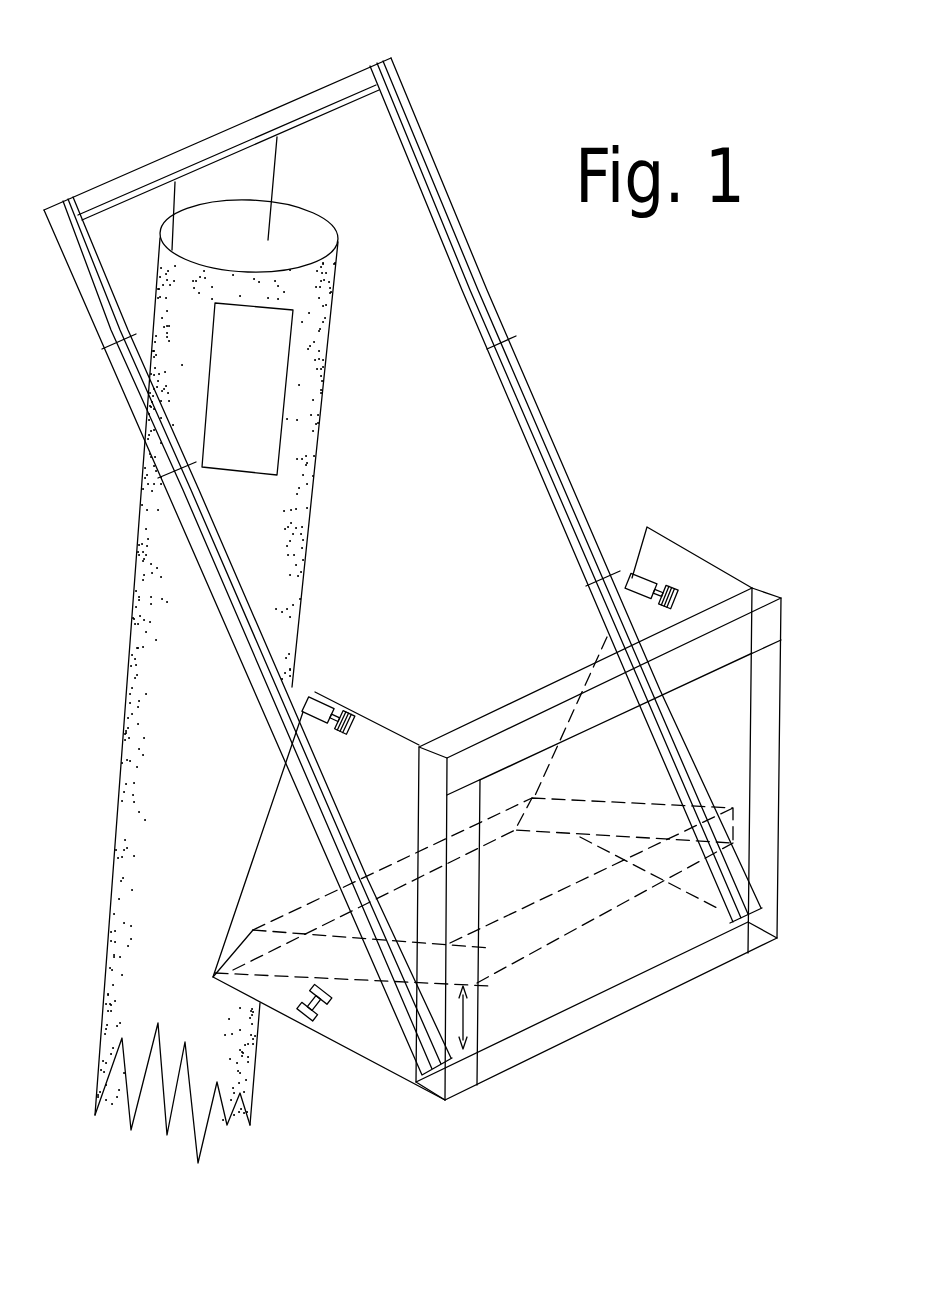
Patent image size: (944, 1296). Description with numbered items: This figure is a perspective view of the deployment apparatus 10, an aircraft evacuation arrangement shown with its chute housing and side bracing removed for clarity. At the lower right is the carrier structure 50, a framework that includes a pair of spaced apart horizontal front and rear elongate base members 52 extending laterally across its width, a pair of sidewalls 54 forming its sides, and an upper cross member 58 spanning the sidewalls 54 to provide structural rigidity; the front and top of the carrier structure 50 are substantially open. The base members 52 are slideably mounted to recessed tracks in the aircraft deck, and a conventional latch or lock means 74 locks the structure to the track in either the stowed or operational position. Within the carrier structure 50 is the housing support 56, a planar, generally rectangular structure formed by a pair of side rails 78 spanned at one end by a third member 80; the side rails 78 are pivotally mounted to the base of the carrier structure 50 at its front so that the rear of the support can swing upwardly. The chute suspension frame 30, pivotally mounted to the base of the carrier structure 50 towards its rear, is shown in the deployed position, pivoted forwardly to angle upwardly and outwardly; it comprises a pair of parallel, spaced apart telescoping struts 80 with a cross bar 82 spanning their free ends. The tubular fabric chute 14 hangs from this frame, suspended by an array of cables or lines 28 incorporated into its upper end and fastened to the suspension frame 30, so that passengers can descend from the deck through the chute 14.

The deployment apparatus 10 is at (749, 505).
The tubular fabric chute 14 is at (121, 797).
The cables or lines 28 is at (279, 166).
The suspension frame 30 is at (403, 544).
The carrier structure 50 is at (538, 844).
The base members 52 is at (482, 879).
The sidewalls 54 is at (353, 1015).
The housing support 56 is at (556, 933).
The upper cross member 58 is at (510, 703).
The latch or lock means 74 is at (310, 1013).
The side rails 78 is at (473, 892).
The telescoping struts 80 is at (120, 345).
The cross bar 82 is at (161, 162).